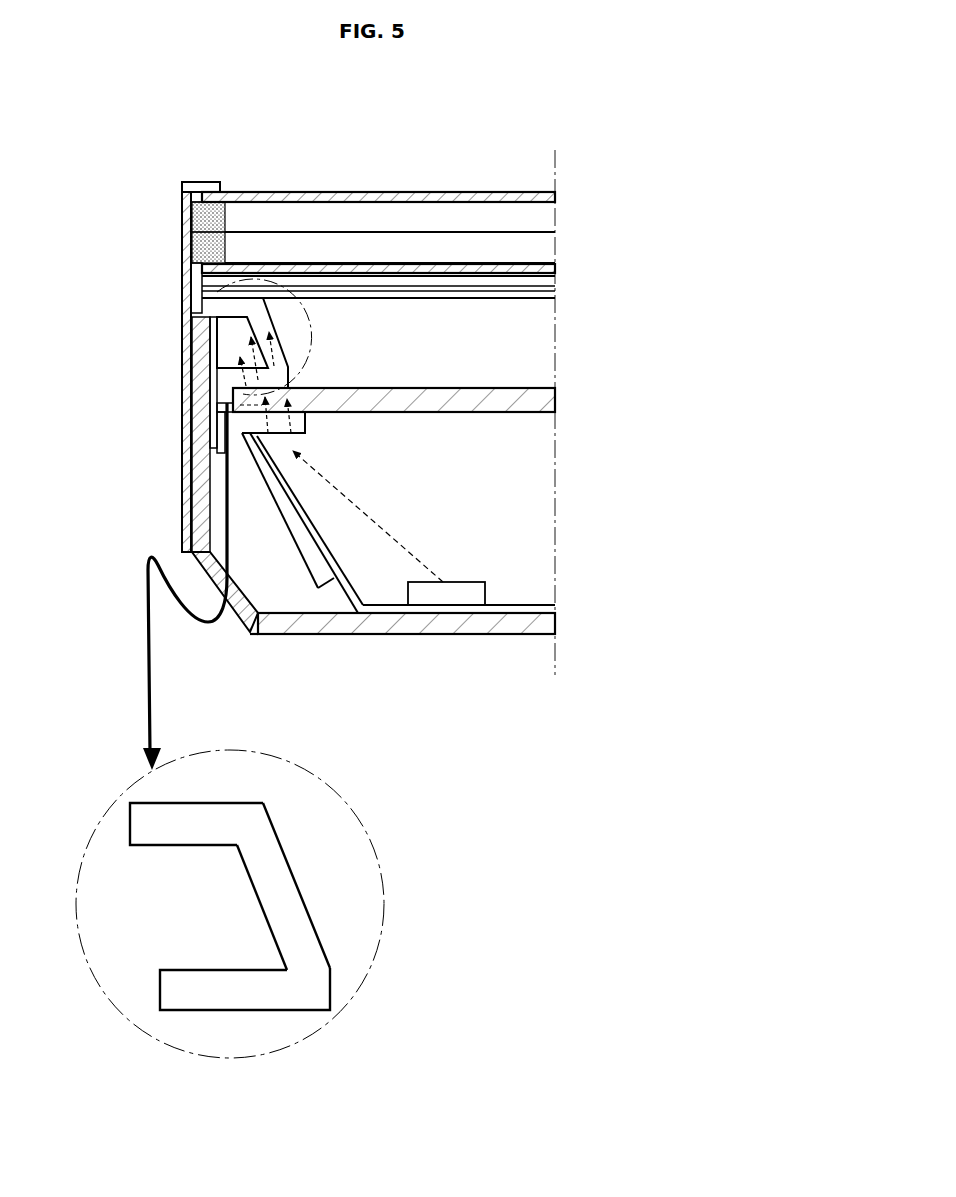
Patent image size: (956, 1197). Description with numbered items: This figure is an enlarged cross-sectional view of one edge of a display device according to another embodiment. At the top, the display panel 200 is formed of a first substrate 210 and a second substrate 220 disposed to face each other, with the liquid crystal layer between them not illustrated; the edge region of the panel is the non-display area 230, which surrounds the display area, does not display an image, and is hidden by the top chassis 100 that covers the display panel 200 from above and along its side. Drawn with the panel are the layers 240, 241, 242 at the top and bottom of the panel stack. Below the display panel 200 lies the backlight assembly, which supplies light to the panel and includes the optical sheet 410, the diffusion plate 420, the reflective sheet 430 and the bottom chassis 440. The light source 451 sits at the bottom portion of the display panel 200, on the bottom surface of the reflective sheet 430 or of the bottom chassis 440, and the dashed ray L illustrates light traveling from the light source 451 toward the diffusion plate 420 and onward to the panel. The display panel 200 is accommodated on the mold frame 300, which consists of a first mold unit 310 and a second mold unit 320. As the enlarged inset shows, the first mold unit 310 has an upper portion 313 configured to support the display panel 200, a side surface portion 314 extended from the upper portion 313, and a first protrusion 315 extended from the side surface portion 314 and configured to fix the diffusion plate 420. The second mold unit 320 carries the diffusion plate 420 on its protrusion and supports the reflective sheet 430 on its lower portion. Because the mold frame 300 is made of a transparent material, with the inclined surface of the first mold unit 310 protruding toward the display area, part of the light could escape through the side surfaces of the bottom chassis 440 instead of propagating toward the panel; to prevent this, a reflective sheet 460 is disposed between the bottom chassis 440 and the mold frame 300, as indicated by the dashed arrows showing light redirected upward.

The top chassis 100 is at (190, 180).
The display panel 200 is at (462, 232).
The first substrate 210 is at (540, 243).
The second substrate 220 is at (540, 214).
The non-display area 230 is at (207, 212).
The optical film 240 is at (378, 183).
The lower polarizer 241 is at (455, 268).
The upper polarizer 242 is at (390, 197).
The mold frame 300 is at (302, 687).
The first mold unit 310 is at (225, 400).
The upper portion 313 is at (182, 820).
The side surface portion 314 is at (278, 893).
The first protrusion 315 is at (212, 990).
The second mold unit 320 is at (222, 428).
The optical sheet 410 is at (558, 275).
The diffusion plate 420 is at (540, 400).
The reflective sheet 430 is at (508, 607).
The bottom chassis 440 is at (430, 622).
The light source 451 is at (470, 590).
The reflective sheet 460 is at (214, 333).
The light L is at (385, 520).